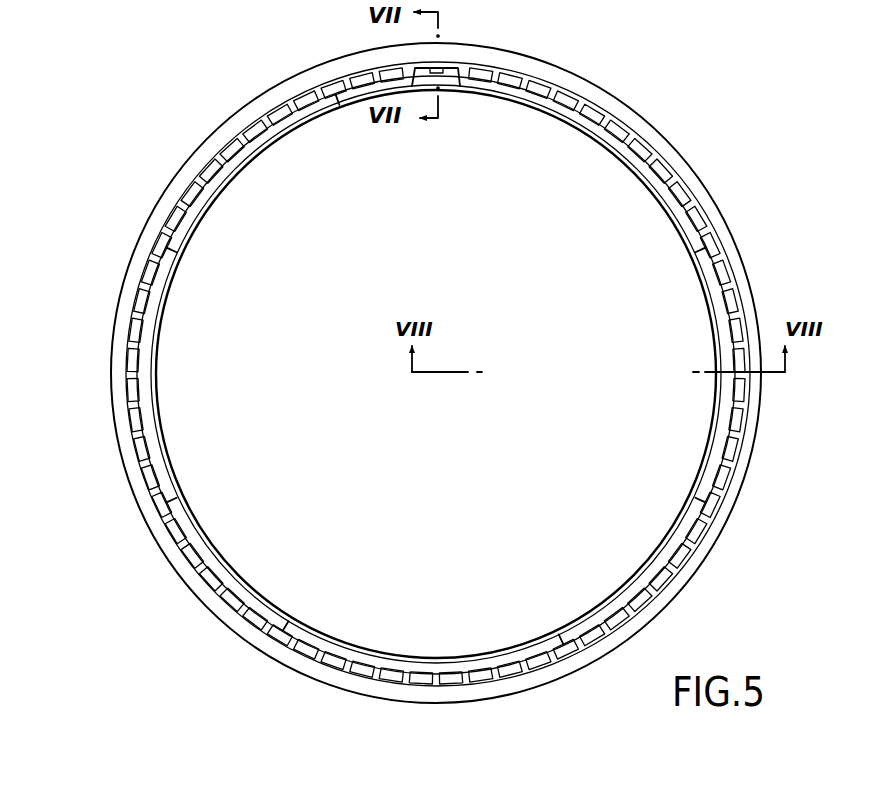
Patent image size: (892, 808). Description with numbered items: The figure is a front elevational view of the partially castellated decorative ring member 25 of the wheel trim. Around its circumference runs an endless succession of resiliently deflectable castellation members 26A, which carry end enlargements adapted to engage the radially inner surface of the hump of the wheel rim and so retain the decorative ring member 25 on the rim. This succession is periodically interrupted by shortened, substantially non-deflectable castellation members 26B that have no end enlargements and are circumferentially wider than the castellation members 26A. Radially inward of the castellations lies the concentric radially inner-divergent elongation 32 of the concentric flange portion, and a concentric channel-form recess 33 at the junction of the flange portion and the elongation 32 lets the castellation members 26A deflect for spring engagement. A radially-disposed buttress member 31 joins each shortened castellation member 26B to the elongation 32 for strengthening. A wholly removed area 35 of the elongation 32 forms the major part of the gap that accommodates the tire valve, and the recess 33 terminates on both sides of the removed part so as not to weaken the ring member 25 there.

The decorative ring member 25 is at (166, 152).
The castellation members 26A is at (266, 104).
The shortened and substantially non-deflectable castellation members 26B is at (316, 76).
The radially-disposed buttress member 31 is at (332, 104).
The concentric radially inner-divergent elongation 32 is at (584, 131).
The concentric channel-form recess 33 is at (288, 620).
The wholly removed area 35 is at (448, 90).